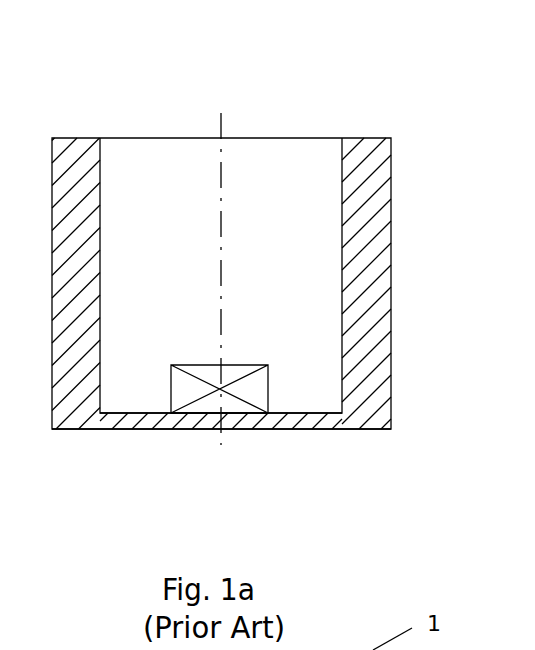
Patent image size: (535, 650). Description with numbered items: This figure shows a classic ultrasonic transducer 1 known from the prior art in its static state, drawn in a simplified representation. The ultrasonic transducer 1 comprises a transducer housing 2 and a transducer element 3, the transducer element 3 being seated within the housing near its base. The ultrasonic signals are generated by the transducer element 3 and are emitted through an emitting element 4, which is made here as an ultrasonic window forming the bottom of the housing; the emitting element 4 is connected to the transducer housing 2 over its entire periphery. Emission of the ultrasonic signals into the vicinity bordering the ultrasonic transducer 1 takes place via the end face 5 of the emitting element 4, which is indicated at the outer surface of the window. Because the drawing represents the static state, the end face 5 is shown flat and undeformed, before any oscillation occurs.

The ultrasonic transducer 1 is at (383, 97).
The transducer housing 2 is at (383, 173).
The transducer element 3 is at (259, 403).
The emitting element 4 is at (120, 428).
The end face 5 is at (198, 430).